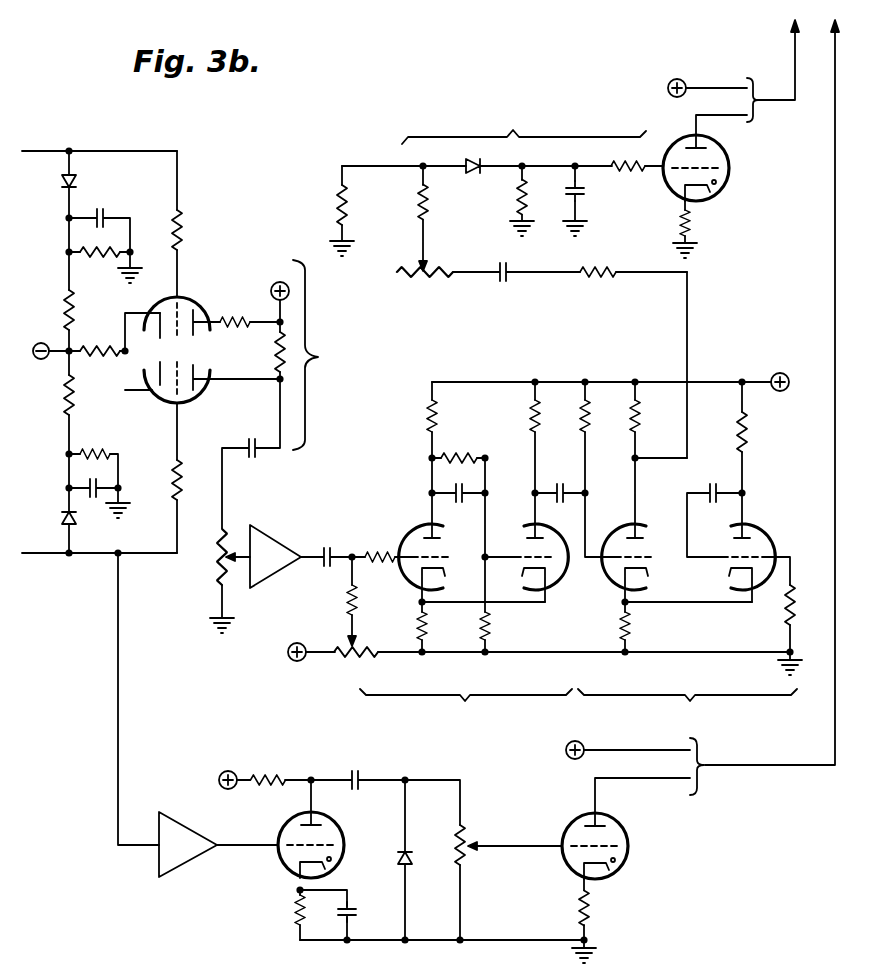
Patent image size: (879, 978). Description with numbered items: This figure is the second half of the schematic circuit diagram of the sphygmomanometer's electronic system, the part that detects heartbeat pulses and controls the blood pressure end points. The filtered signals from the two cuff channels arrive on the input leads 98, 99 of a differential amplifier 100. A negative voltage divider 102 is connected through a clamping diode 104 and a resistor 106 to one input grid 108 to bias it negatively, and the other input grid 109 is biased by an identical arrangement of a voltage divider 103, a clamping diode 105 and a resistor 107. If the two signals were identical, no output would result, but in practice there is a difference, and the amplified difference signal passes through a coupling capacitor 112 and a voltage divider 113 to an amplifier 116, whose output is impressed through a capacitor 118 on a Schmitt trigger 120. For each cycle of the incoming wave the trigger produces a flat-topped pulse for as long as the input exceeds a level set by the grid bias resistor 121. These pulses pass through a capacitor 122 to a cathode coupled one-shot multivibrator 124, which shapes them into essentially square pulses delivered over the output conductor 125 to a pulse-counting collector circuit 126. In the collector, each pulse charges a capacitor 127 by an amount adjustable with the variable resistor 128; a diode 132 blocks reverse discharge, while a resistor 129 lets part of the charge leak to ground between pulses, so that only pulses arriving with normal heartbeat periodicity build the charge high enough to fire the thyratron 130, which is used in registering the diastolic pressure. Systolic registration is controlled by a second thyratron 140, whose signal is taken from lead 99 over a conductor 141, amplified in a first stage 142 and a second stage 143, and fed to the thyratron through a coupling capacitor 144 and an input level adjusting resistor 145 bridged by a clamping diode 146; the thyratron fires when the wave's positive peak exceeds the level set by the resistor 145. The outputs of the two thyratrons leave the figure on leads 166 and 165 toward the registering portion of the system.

The input lead 98 is at (45, 151).
The input lead 99 is at (45, 556).
The differential amplifier 100 is at (434, 355).
The negative voltage divider 102 is at (100, 262).
The voltage divider 103 is at (78, 403).
The clamping diode 104 is at (78, 184).
The clamping diode 105 is at (78, 519).
The resistor 106 is at (184, 226).
The resistor 107 is at (186, 482).
The input grid 108 is at (181, 310).
The input grid 109 is at (183, 386).
The coupling capacitor 112 is at (253, 460).
The voltage divider 113 is at (216, 566).
The amplifier 116 is at (267, 543).
The capacitor 118 is at (327, 546).
The Schmitt trigger 120 is at (466, 708).
The grid bias resistor 121 is at (342, 641).
The capacitor 122 is at (559, 487).
The cathode coupled one-shot multivibrator 124 is at (687, 708).
The output conductor 125 is at (690, 323).
The collector circuit 126 is at (524, 125).
The capacitor 127 is at (586, 191).
The variable resistor 128 is at (415, 262).
The resistor 129 is at (516, 200).
The thyratron 130 is at (708, 158).
The diode 132 is at (478, 176).
The second thyratron 140 is at (620, 837).
The conductor 141 is at (119, 710).
The first stage 142 is at (166, 858).
The second stage 143 is at (281, 873).
The coupling capacitor 144 is at (357, 770).
The input level adjusting resistor 145 is at (466, 837).
The clamping diode 146 is at (412, 862).
The output lead 165 is at (833, 268).
The output lead 166 is at (794, 52).